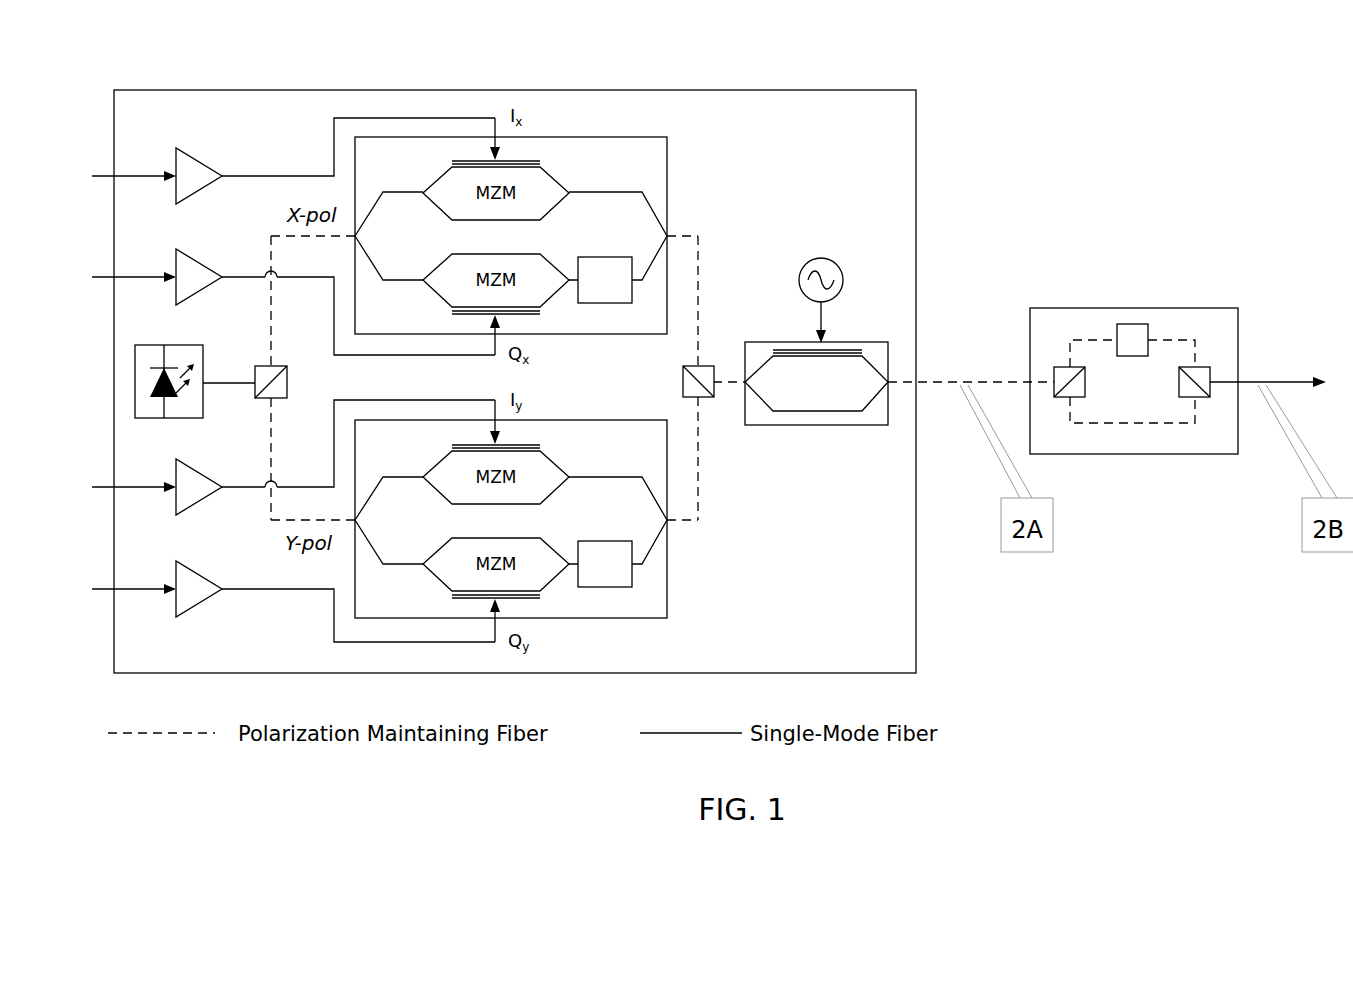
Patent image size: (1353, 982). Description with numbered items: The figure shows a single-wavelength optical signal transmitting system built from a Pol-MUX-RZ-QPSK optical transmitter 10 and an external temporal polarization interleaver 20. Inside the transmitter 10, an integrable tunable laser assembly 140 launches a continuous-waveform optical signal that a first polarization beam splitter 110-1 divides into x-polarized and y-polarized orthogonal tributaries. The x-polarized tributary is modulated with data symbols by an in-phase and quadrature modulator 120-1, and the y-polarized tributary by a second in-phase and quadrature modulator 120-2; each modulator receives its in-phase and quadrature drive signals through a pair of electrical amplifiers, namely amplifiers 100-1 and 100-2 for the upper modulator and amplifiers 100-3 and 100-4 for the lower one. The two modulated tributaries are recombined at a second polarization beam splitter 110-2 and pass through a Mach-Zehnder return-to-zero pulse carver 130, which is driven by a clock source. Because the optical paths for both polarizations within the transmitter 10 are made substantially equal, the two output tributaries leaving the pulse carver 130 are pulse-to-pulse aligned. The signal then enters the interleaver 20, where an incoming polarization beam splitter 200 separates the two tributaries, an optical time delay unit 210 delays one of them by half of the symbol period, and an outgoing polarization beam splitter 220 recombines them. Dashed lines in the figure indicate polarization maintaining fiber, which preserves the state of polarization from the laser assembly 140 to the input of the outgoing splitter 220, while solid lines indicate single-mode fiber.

The Pol-MUX-RZ-QPSK optical transmitter 10 is at (790, 90).
The electrical amplifier 100-1 is at (203, 162).
The electrical amplifier 100-2 is at (193, 266).
The electrical amplifier 100-3 is at (190, 468).
The electrical amplifier 100-4 is at (188, 574).
The integrable tunable laser assembly 140 is at (203, 364).
The polarization beam splitter 110-1 is at (287, 380).
The polarization beam splitter 110-2 is at (683, 382).
The optical in-phase and quadrature modulator 120-1 is at (667, 192).
The optical in-phase and quadrature modulator 120-2 is at (667, 598).
The Mach-Zehnder return-to-zero pulse carver 130 is at (840, 342).
The temporal polarization interleaver 20 is at (1128, 348).
The incoming polarization beam splitter 200 is at (1054, 380).
The optical time delay unit 210 is at (1148, 336).
The outgoing polarization beam splitter 220 is at (1210, 372).